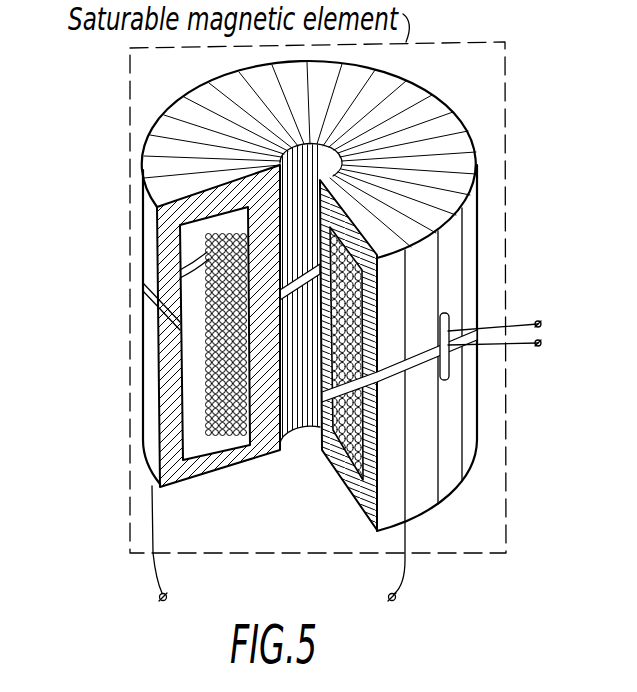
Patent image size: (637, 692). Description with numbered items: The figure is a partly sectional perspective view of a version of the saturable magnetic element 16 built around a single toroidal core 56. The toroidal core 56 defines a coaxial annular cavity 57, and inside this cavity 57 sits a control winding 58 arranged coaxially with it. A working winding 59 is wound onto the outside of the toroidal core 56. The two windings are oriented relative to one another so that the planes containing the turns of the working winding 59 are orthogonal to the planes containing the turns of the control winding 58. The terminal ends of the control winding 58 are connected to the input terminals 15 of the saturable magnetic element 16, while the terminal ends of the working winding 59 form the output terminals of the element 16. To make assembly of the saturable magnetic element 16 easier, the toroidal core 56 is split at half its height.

The input terminals 15 is at (445, 357).
The saturable magnetic element 16 is at (507, 511).
The toroidal core 56 is at (381, 532).
The coaxial annular cavity 57 is at (348, 457).
The control winding 58 is at (200, 397).
The working winding 59 is at (152, 168).